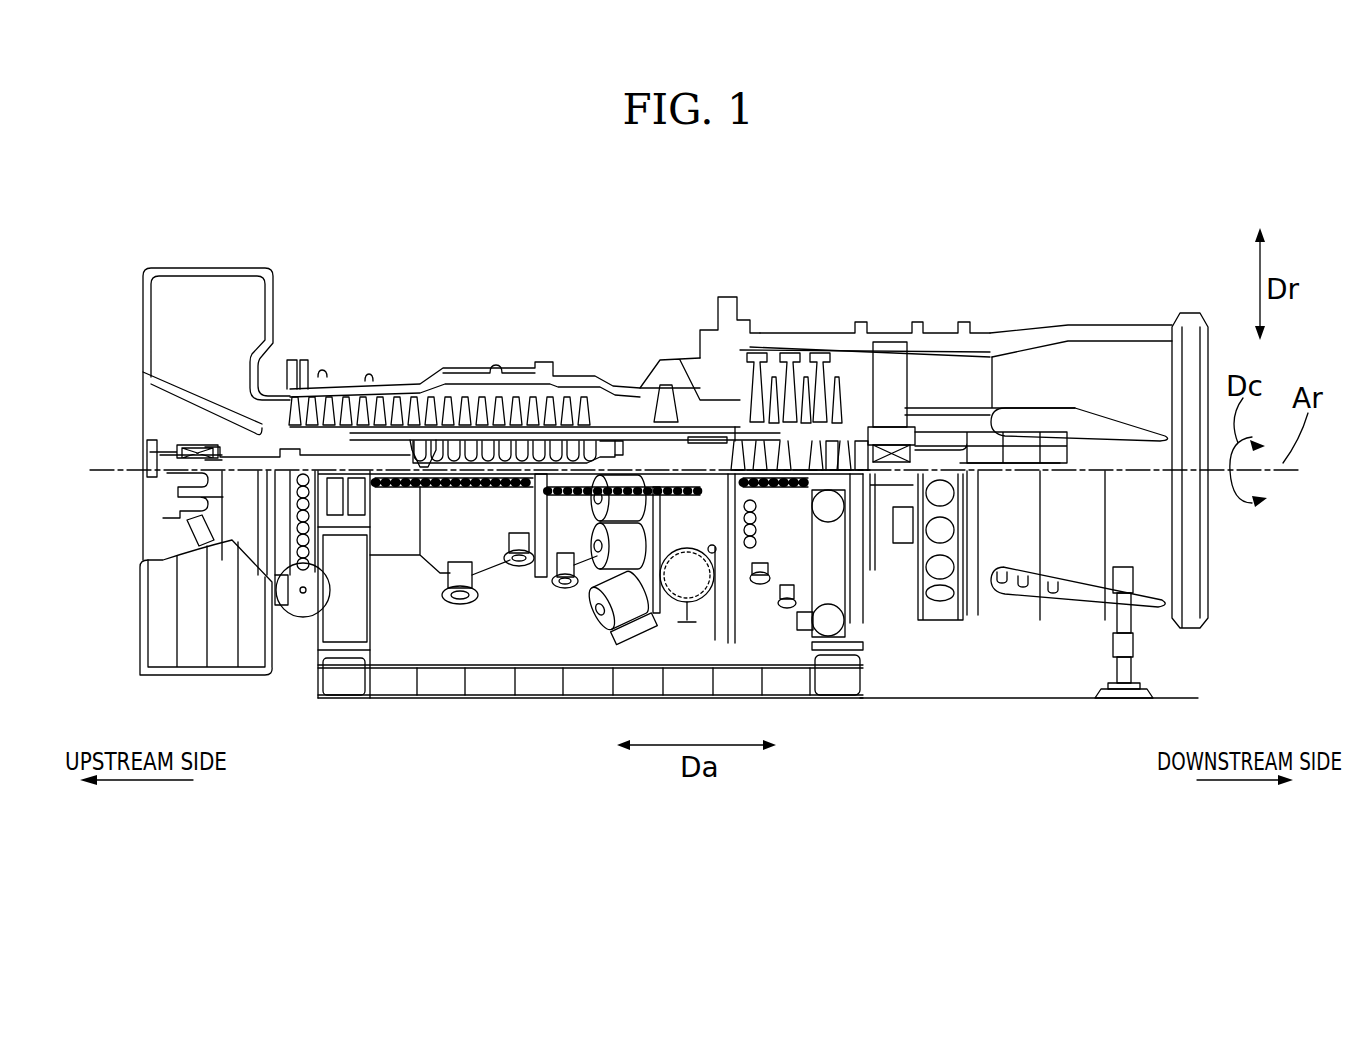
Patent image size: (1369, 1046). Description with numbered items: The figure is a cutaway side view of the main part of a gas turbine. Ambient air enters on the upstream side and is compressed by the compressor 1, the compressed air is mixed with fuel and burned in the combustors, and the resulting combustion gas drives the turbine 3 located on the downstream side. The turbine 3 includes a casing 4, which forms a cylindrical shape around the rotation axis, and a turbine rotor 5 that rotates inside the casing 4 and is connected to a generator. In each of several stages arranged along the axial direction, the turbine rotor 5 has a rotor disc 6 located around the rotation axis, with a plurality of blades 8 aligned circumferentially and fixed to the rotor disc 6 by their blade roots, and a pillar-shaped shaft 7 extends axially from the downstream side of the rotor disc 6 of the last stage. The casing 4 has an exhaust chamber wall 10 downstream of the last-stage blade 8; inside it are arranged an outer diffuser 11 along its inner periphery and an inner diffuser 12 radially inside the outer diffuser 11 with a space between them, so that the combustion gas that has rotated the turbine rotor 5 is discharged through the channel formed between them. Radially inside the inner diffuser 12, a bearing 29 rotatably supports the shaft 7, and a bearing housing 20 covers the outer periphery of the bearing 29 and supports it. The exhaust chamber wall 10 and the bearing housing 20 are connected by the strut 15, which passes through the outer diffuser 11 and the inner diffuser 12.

The compressor 1 is at (400, 370).
The turbine 3 is at (792, 332).
The casing 4 is at (778, 347).
The turbine rotor 5 is at (807, 249).
The rotor disc 6 is at (833, 455).
The shaft 7 is at (863, 463).
The blade 8 is at (830, 390).
The exhaust chamber wall 10 is at (885, 337).
The outer diffuser 11 is at (913, 432).
The inner diffuser 12 is at (938, 412).
The strut 15 is at (896, 372).
The bearing housing 20 is at (920, 425).
The bearing 29 is at (884, 460).